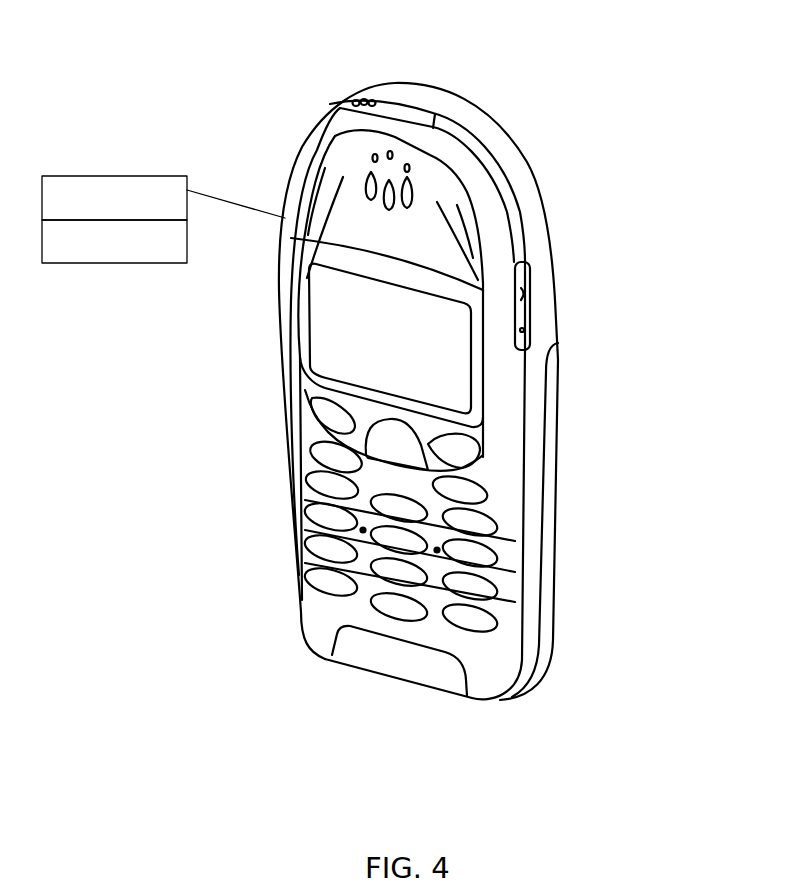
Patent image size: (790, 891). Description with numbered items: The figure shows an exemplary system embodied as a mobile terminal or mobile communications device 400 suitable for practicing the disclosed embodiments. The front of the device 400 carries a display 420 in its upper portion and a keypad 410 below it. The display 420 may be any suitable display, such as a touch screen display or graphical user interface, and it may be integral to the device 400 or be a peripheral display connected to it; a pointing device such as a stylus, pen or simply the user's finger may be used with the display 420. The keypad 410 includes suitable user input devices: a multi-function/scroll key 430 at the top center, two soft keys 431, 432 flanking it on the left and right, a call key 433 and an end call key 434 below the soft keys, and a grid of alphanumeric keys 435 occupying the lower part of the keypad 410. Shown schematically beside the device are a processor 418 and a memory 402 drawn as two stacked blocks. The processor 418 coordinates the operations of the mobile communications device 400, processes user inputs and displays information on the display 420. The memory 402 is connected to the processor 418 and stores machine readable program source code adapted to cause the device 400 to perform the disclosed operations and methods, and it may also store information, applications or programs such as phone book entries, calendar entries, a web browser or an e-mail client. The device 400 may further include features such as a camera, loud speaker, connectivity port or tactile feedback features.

The mobile communications device 400 is at (511, 94).
The memory 402 is at (86, 263).
The processor 418 is at (86, 176).
The keypad 410 is at (485, 635).
The display 420 is at (438, 362).
The multi-function/scroll key 430 is at (403, 450).
The soft key 431 is at (335, 415).
The soft key 432 is at (463, 451).
The call key 433 is at (333, 451).
The end call key 434 is at (462, 490).
The alphanumeric keys 435 is at (333, 583).